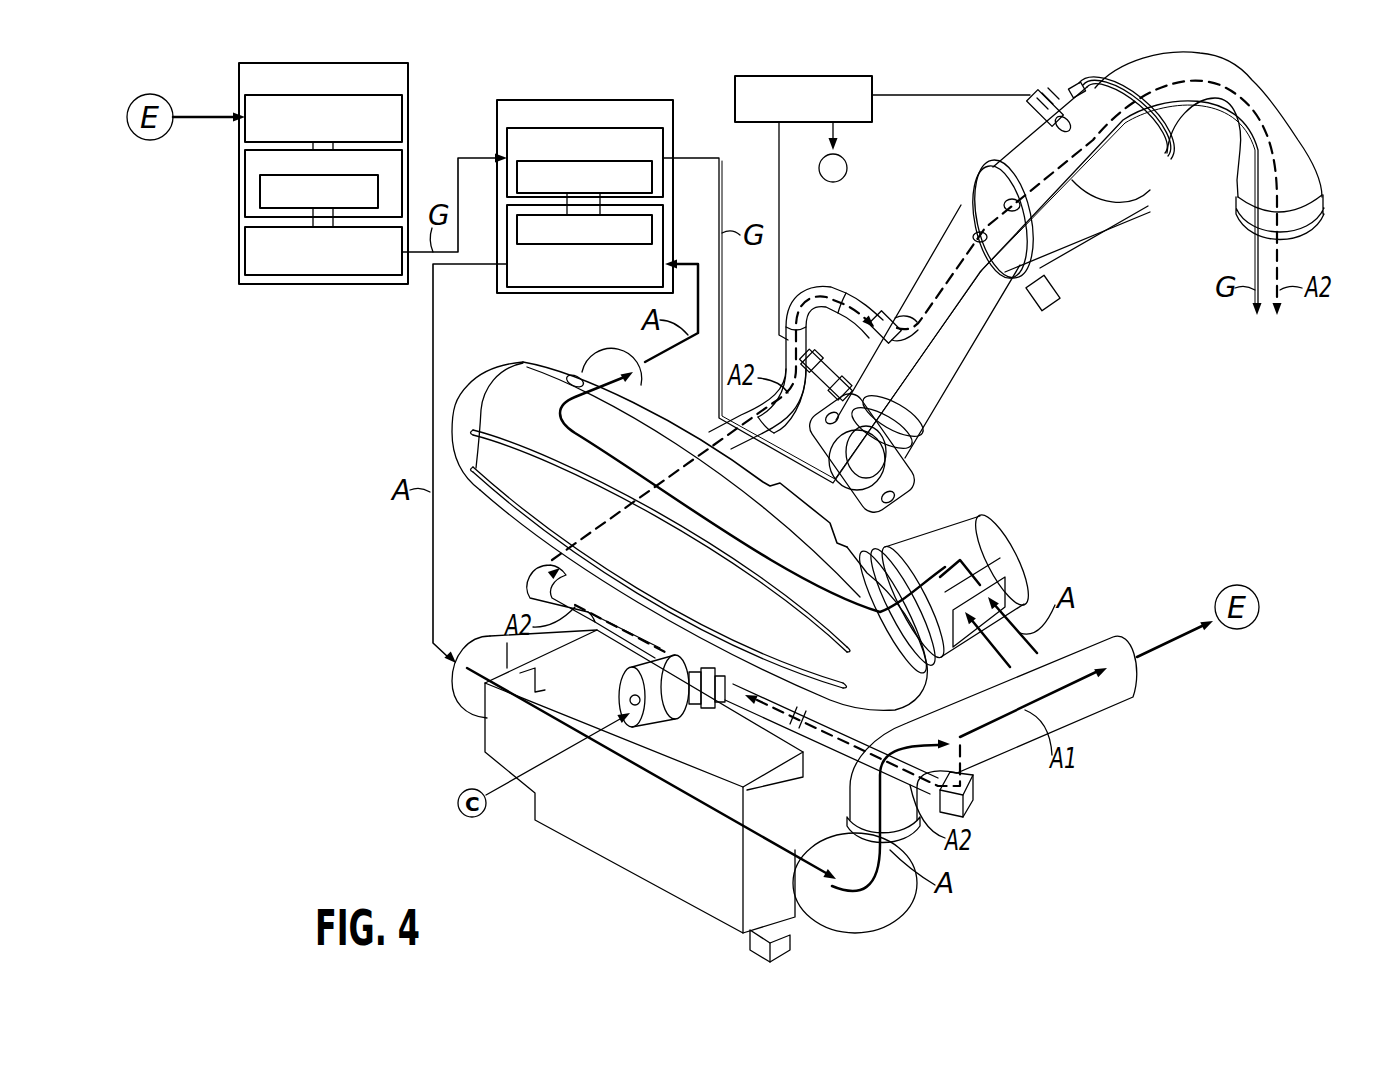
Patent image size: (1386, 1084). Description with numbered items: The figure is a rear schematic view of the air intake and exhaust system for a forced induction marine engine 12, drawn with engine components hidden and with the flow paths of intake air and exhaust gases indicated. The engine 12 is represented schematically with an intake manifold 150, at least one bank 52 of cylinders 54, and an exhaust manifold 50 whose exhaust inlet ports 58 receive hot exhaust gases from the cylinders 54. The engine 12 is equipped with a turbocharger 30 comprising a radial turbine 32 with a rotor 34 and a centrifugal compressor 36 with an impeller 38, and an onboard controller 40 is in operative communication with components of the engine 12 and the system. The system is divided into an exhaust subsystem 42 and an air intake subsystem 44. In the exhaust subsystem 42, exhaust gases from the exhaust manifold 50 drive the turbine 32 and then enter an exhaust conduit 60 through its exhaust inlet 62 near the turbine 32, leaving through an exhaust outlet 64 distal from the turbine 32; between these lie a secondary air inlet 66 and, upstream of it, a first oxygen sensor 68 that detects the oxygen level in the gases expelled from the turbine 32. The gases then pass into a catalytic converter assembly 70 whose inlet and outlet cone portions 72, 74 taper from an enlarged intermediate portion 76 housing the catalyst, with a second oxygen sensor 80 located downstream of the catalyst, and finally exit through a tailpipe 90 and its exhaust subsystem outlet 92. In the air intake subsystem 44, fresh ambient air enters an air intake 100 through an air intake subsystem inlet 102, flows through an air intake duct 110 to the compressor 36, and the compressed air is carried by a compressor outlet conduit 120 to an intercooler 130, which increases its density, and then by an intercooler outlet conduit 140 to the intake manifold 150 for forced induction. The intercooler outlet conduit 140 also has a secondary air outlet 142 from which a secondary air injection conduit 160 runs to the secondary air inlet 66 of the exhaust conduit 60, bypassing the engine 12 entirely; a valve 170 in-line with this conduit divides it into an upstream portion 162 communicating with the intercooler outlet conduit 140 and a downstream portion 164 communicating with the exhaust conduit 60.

The marine engine 12 is at (320, 285).
The turbocharger 30 is at (548, 100).
The radial turbine 32 is at (507, 132).
The rotor 34 is at (517, 175).
The centrifugal compressor 36 is at (545, 293).
The impeller 38 is at (652, 232).
The onboard controller 40 is at (735, 92).
The exhaust subsystem 42 is at (1235, 154).
The air intake subsystem 44 is at (498, 540).
The exhaust manifold 50 is at (245, 265).
The bank of cylinders 52 is at (245, 158).
The cylinders 54 is at (260, 192).
The exhaust inlet ports 58 is at (318, 212).
The exhaust conduit 60 is at (948, 262).
The exhaust inlet 62 is at (905, 487).
The exhaust outlet 64 is at (1040, 305).
The secondary air inlet 66 is at (917, 307).
The first oxygen sensor 68 is at (805, 405).
The catalytic converter assembly 70 is at (1002, 143).
The inlet cone portion 72 is at (975, 215).
The outlet cone portion 74 is at (1145, 178).
The intermediate portion 76 is at (1105, 235).
The second oxygen sensor 80 is at (1030, 93).
The tailpipe 90 is at (1320, 148).
The exhaust subsystem outlet 92 is at (1305, 240).
The air intake 100 is at (925, 543).
The air intake subsystem inlet 102 is at (1020, 555).
The air intake duct 110 is at (686, 520).
The compressor outlet conduit 120 is at (462, 713).
The intercooler 130 is at (655, 834).
The intercooler outlet conduit 140 is at (1100, 697).
The secondary air outlet 142 is at (985, 780).
The intake manifold 150 is at (245, 97).
The secondary air injection conduit 160 is at (508, 597).
The upstream portion 162 is at (853, 797).
The downstream portion 164 is at (832, 286).
The valve 170 is at (628, 692).